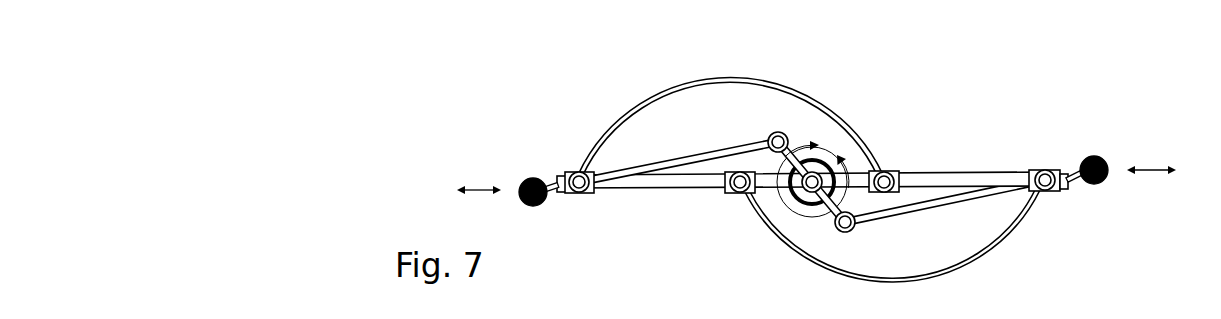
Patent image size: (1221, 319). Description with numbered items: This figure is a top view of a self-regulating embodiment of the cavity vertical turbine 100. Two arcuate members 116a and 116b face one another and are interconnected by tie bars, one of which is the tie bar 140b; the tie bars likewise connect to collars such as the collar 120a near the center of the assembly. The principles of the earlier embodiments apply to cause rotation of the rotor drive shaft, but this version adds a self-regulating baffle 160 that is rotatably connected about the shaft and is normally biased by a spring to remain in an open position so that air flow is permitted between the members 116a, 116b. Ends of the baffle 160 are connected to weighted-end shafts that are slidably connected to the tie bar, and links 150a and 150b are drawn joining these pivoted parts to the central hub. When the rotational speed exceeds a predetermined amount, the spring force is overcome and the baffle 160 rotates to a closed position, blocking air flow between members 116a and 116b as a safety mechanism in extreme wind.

The cavity vertical turbine 100 is at (1104, 108).
The member 116a is at (983, 253).
The member 116b is at (627, 115).
The collar 120a is at (795, 205).
The tie bar 140b is at (663, 187).
The first link 150a is at (925, 203).
The second link 150b is at (712, 148).
The self-regulating baffle 160 is at (873, 172).